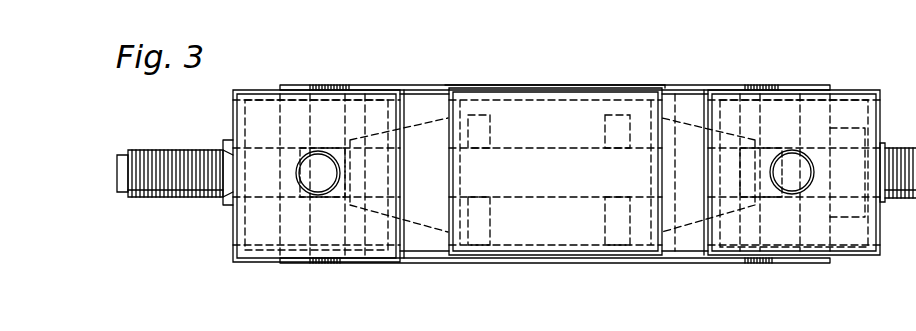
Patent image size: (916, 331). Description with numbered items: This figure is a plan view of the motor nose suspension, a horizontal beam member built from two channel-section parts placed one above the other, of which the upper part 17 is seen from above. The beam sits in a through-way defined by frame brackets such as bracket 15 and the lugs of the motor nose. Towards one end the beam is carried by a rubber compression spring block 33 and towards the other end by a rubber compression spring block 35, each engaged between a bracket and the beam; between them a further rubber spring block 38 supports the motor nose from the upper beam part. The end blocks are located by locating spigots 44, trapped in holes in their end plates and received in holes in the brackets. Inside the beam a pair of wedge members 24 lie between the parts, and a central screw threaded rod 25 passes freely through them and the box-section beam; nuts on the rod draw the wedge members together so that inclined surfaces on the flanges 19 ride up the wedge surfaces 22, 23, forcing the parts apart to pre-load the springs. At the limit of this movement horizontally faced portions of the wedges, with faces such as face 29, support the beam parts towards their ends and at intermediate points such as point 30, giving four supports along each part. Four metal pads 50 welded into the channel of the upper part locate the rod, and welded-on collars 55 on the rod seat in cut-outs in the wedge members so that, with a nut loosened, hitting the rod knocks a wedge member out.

The bracket 15 is at (408, 118).
The upper beam member part 17 is at (685, 112).
The flanges 19 is at (672, 95).
The wedge surface 22 is at (330, 85).
The wedge surface 23 is at (452, 88).
The wedge member 24 is at (742, 117).
The screw threaded rod 25 is at (548, 158).
The horizontally disposed face 29 is at (298, 85).
The intermediate support point 30 is at (412, 88).
The rubber compression spring block 33 is at (258, 229).
The rubber compression spring block 35 is at (845, 120).
The rubber spring block 38 is at (545, 115).
The locating spigot 44 is at (318, 162).
The metal pad 50 is at (486, 215).
The collar 55 is at (352, 142).